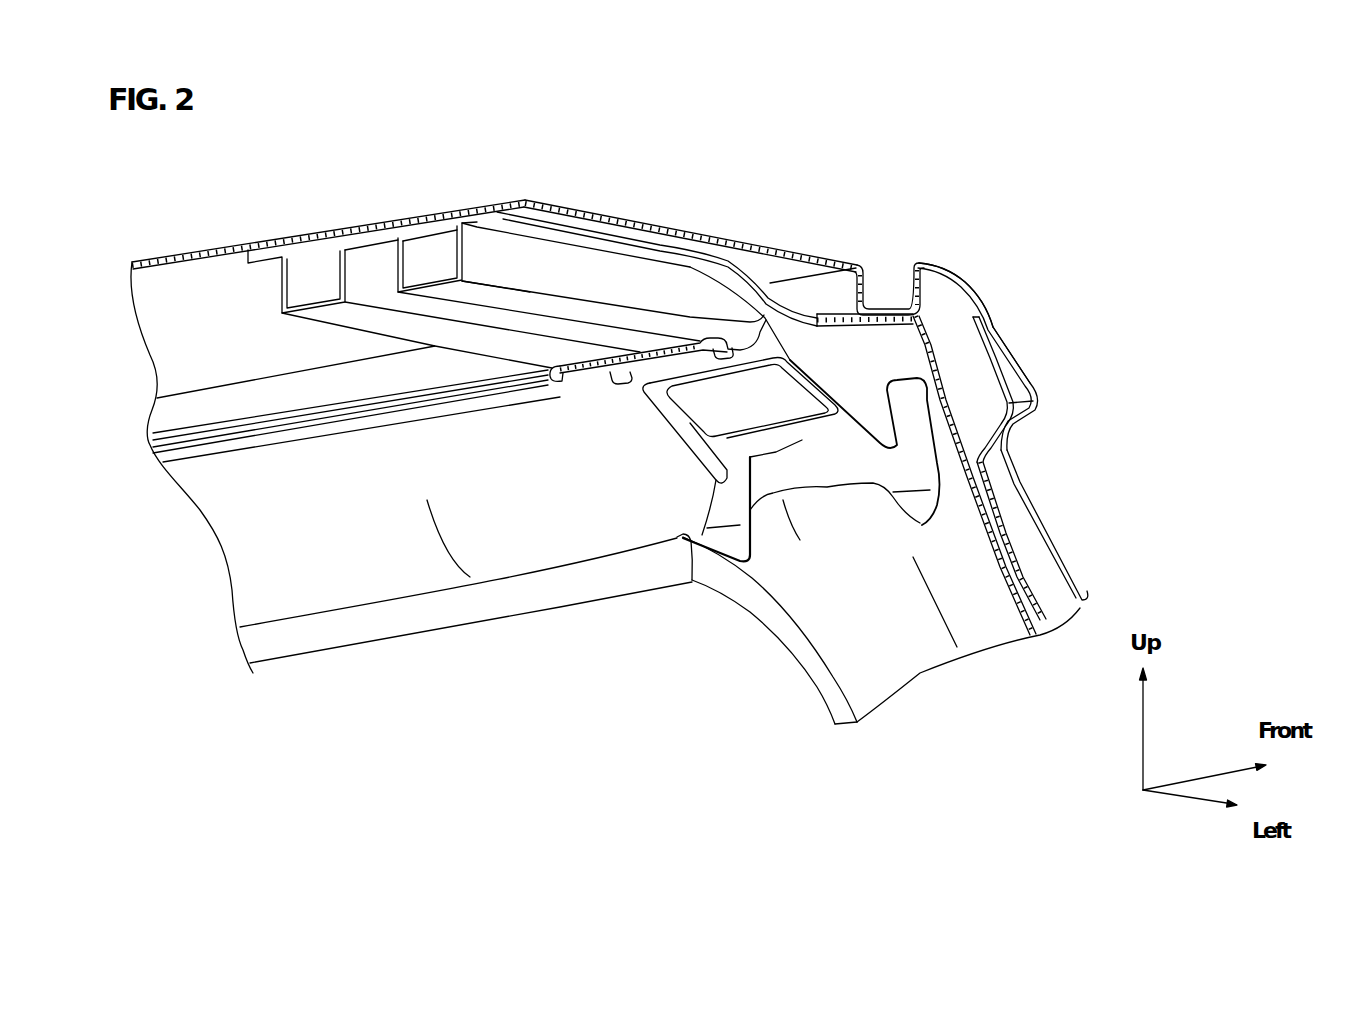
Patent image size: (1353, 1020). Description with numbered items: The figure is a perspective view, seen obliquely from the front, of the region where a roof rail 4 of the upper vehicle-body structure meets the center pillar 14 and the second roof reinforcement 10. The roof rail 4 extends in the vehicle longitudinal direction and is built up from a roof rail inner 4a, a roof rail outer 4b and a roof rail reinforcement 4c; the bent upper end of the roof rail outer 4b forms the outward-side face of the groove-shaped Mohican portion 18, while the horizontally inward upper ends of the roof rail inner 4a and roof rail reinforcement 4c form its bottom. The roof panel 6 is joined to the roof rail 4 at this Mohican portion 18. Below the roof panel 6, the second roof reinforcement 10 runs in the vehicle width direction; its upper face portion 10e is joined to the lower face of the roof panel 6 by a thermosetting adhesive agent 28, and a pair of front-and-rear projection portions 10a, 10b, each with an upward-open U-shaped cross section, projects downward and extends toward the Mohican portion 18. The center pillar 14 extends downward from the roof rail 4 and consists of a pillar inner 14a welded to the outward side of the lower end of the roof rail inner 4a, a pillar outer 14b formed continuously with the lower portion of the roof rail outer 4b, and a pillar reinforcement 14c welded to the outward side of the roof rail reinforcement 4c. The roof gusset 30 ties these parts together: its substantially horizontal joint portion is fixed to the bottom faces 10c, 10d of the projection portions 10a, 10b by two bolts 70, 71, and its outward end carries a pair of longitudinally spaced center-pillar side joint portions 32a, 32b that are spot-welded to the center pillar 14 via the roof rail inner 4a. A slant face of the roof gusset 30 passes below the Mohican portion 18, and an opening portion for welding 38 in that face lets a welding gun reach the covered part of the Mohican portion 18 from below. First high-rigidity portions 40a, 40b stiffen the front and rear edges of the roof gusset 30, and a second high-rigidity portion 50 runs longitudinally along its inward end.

The roof rail 4 is at (982, 283).
The roof rail inner 4a is at (933, 362).
The roof rail outer 4b is at (1025, 357).
The roof rail reinforcement 4c is at (935, 305).
The roof panel 6 is at (750, 240).
The second roof reinforcement 10 is at (320, 335).
The projection portion 10a is at (445, 245).
The projection portion 10b is at (308, 268).
The bottom face 10c is at (532, 305).
The bottom face 10d is at (462, 339).
The upper face portion 10e is at (367, 225).
The center pillar 14 is at (824, 691).
The pillar inner 14a is at (993, 637).
The pillar outer 14b is at (1077, 577).
The pillar reinforcement 14c is at (1040, 553).
The Mohican portion 18 is at (887, 276).
The thermosetting adhesive agent 28 is at (414, 222).
The roof gusset 30 is at (632, 549).
The center-pillar side joint portion 32a is at (890, 470).
The center-pillar side joint portion 32b is at (712, 513).
The opening portion for welding 38 is at (617, 381).
The first high-rigidity portion 40a is at (850, 488).
The first high-rigidity portion 40b is at (650, 450).
The second high-rigidity portion 50 is at (644, 350).
The bolt 70 is at (730, 356).
The bolt 71 is at (562, 380).